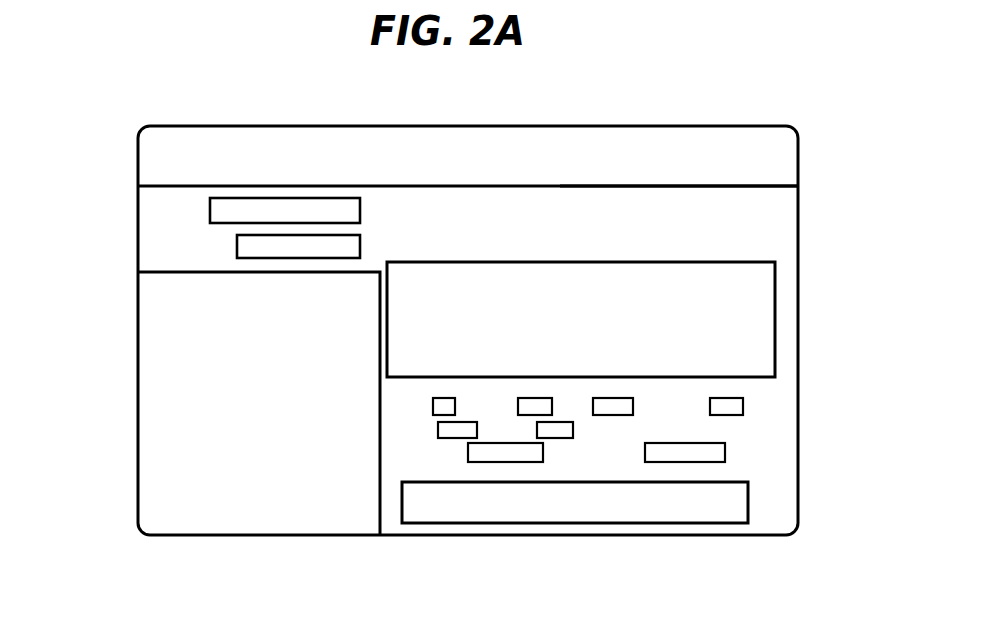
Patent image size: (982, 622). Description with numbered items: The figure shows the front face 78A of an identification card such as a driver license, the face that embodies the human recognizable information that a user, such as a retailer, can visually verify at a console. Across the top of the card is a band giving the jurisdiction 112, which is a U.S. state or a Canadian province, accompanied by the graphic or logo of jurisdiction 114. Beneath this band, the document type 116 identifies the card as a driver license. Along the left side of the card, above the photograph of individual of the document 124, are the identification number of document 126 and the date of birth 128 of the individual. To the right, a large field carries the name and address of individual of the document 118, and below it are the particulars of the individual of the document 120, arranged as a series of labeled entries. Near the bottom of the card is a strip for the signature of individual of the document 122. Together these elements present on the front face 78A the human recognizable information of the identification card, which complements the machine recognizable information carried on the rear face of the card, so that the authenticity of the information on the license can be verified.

The front face 78A is at (635, 535).
The jurisdiction 112 is at (577, 153).
The graphic or logo of jurisdiction 114 is at (753, 152).
The document type 116 is at (740, 227).
The name and address of individual of the document 118 is at (762, 317).
The particulars of the individual of the document 120 is at (745, 430).
The signature of individual of the document 122 is at (749, 507).
The photograph of individual of the document 124 is at (137, 414).
The identification number of document 126 is at (152, 211).
The date of birth 128 is at (152, 245).